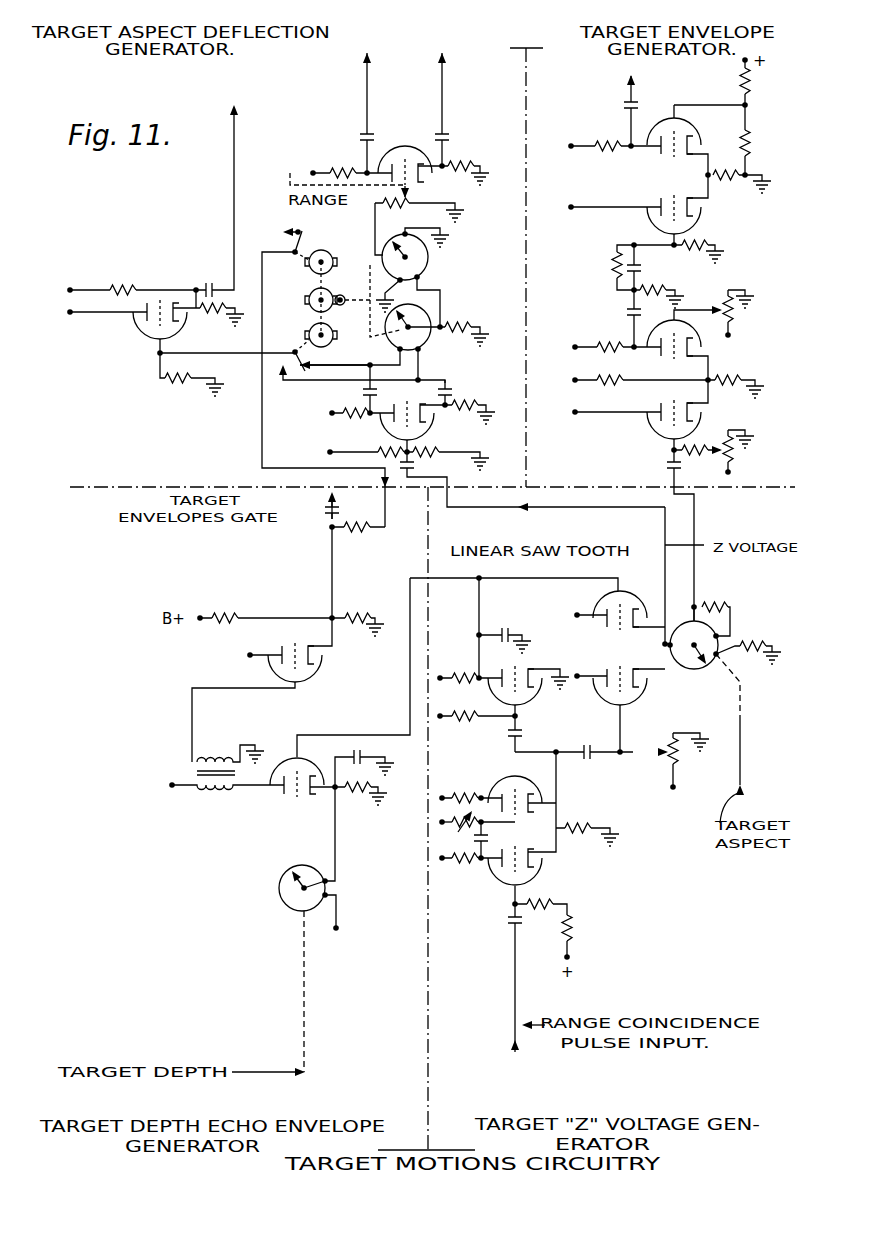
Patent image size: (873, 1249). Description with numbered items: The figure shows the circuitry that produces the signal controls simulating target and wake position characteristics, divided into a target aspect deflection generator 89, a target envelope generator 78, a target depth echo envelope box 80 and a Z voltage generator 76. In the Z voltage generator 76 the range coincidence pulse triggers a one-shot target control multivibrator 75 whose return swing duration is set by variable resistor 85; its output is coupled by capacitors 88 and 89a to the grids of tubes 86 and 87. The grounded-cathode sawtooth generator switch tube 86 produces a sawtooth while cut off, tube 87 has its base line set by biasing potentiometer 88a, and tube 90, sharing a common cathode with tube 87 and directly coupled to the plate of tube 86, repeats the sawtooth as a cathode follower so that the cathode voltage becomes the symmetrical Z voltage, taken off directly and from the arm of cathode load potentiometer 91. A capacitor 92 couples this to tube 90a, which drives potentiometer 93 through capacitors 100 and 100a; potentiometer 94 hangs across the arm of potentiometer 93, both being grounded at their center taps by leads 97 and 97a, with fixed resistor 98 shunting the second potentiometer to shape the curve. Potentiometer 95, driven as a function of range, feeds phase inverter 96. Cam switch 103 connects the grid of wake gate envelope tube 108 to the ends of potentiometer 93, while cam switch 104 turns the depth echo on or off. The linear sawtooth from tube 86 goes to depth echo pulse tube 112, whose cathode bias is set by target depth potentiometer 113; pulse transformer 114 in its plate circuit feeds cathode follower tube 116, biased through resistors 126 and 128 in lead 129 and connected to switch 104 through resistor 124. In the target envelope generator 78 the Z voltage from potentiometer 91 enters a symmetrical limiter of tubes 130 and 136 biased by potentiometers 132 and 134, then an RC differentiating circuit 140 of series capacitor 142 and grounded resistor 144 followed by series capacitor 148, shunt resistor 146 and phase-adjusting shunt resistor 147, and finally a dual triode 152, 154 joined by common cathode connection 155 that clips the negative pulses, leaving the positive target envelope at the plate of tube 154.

The phase inverter 96 is at (405, 146).
The potentiometer 95 is at (420, 200).
The lead 97a is at (420, 228).
The lead 97 is at (385, 290).
The potentiometer 94 is at (430, 255).
The fixed resistor 98 is at (458, 322).
The potentiometer 93 is at (423, 343).
The cam switch 104 is at (320, 257).
The cam switch 103 is at (309, 338).
The wake gate envelope tube 108 is at (140, 333).
The capacitor 100 is at (360, 392).
The capacitor 100a is at (445, 392).
The tube 90a is at (432, 424).
The capacitor 92 is at (422, 468).
The target aspect deflection generator 89 is at (98, 493).
The resistor 124 is at (352, 534).
The resistor 126 is at (235, 606).
The lead 129 is at (295, 606).
The resistor 128 is at (365, 606).
The cathode follower tube 116 is at (315, 670).
The depth echo pulse tube 112 is at (297, 757).
The pulse transformer 114 is at (206, 792).
The target depth potentiometer 113 is at (305, 866).
The triode tube 154 is at (690, 130).
The common cathode connection 155 is at (710, 192).
The triode tube 152 is at (700, 226).
The shunt resistor 147 is at (612, 262).
The series capacitor 148 is at (645, 268).
The shunt resistor 146 is at (700, 258).
The RC differentiating circuit 140 is at (625, 297).
The series capacitor 142 is at (625, 316).
The grounded resistor 144 is at (681, 316).
The potentiometer 134 is at (735, 316).
The limiter tube 136 is at (700, 332).
The limiter tube 130 is at (700, 413).
The potentiometer 132 is at (738, 452).
The target envelope generator 78 is at (757, 496).
The tube 90 is at (625, 598).
The potentiometer 91 is at (690, 669).
The sawtooth generator switch tube 86 is at (535, 703).
The tube 87 is at (638, 703).
The capacitor 88 is at (525, 735).
The capacitor 89a is at (592, 760).
The biasing potentiometer 88a is at (662, 770).
The variable resistor 85 is at (440, 823).
The target control multivibrator 75 is at (502, 888).
The target depth echo envelope box 80 is at (434, 1048).
The Z voltage generator 76 is at (420, 1086).